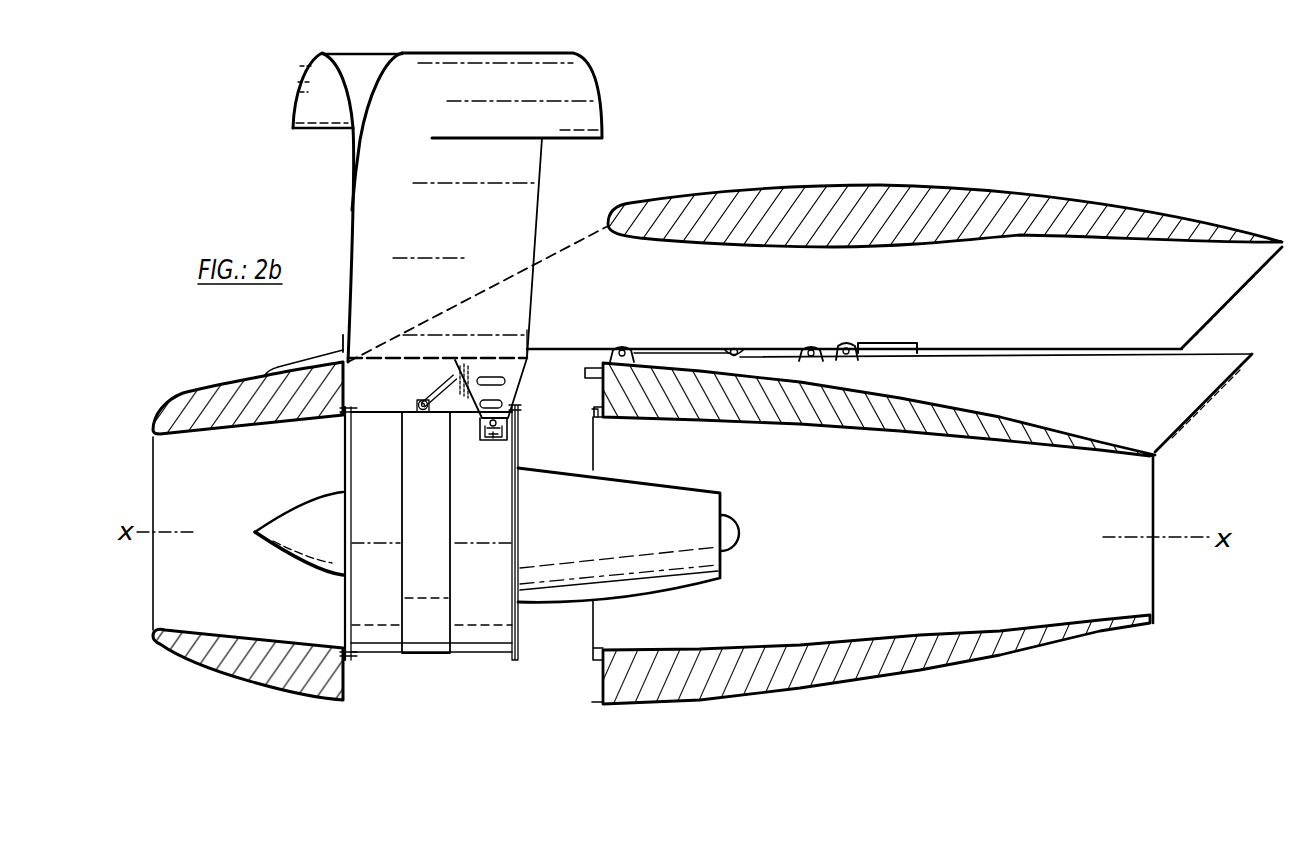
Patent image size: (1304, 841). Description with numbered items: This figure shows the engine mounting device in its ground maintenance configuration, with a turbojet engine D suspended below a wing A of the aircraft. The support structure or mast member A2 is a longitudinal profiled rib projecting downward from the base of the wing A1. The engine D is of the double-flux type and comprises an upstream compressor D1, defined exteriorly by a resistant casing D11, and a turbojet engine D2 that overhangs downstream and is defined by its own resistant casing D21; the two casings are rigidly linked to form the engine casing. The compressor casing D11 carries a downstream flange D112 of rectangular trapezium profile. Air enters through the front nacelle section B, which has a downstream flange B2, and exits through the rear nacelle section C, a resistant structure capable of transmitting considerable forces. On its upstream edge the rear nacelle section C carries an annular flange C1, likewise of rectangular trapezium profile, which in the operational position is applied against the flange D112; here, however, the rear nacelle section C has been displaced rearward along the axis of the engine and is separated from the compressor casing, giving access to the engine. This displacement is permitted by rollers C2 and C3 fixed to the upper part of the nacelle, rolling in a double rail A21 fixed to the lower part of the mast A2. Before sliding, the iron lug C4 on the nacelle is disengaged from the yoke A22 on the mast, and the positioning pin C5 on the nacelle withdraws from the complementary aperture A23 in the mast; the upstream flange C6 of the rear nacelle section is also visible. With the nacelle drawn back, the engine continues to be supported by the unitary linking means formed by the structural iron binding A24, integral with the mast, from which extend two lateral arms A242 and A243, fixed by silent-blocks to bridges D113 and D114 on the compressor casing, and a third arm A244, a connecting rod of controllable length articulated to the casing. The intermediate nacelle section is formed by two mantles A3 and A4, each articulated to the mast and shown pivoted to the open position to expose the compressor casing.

The wing A is at (910, 185).
The wing A1 is at (918, 233).
The support structure or mast member A2 is at (1113, 305).
The double rail A21 is at (913, 343).
The yoke A22 is at (738, 348).
The aperture A23 is at (529, 320).
The structural iron binding A24 is at (469, 370).
The lateral arm A242 is at (495, 376).
The lateral arm A243 is at (495, 376).
The third arm (connecting rod) A244 is at (421, 400).
The mantle A3 is at (568, 88).
The mantle A4 is at (300, 76).
The front nacelle section B is at (262, 406).
The downstream flange B2 is at (346, 701).
The rear nacelle section C is at (896, 528).
The annular flange C1 is at (592, 411).
The roller C2 is at (622, 347).
The roller C3 is at (850, 347).
The iron lug C4 is at (812, 348).
The positioning pin C5 is at (592, 367).
The upstream flange C6 is at (596, 703).
The turbojet engine D is at (483, 654).
The compressor D1 is at (430, 616).
The compressor casing D11 is at (375, 649).
The downstream flange D112 is at (517, 422).
The bridge D113 is at (491, 441).
The bridge D114 is at (491, 441).
The turbojet engine D2 is at (690, 504).
The casing D21 is at (683, 585).